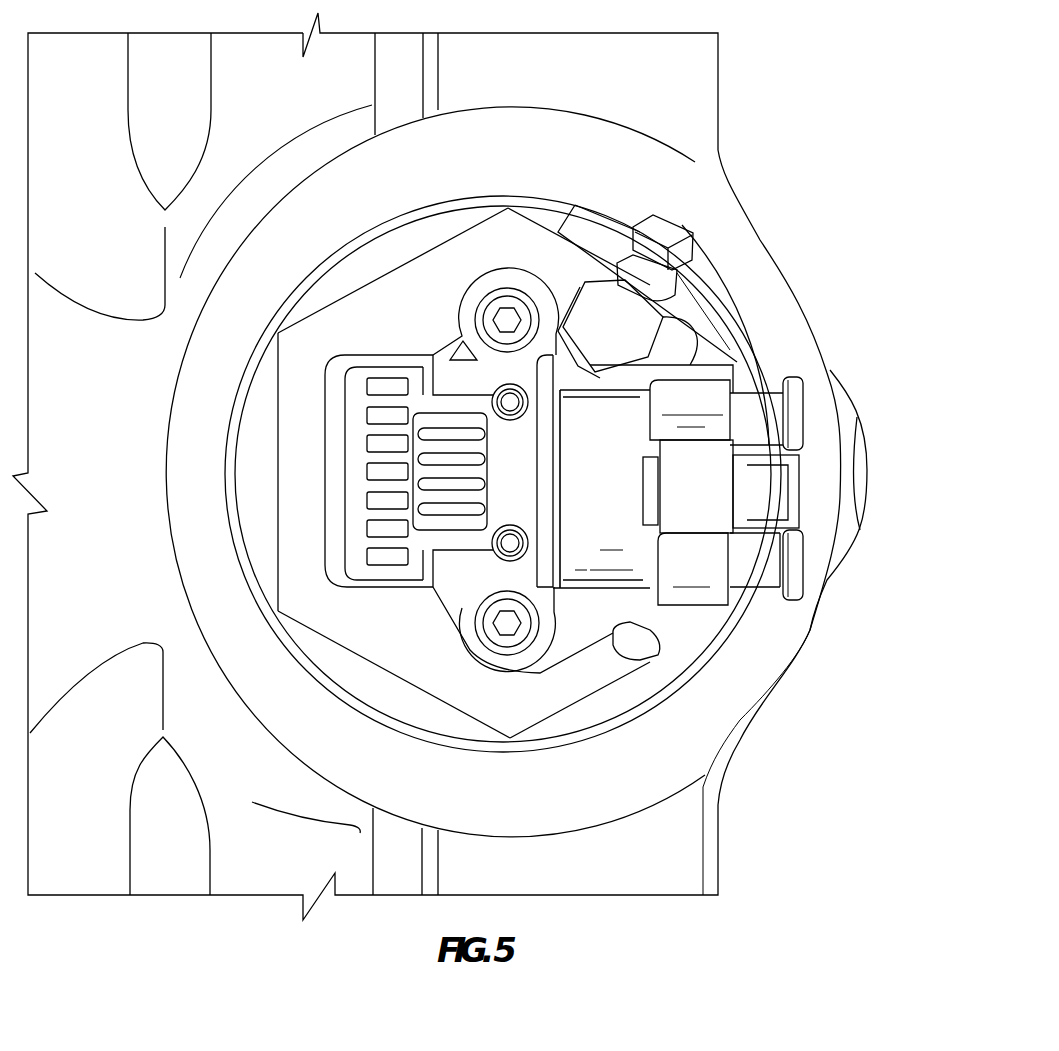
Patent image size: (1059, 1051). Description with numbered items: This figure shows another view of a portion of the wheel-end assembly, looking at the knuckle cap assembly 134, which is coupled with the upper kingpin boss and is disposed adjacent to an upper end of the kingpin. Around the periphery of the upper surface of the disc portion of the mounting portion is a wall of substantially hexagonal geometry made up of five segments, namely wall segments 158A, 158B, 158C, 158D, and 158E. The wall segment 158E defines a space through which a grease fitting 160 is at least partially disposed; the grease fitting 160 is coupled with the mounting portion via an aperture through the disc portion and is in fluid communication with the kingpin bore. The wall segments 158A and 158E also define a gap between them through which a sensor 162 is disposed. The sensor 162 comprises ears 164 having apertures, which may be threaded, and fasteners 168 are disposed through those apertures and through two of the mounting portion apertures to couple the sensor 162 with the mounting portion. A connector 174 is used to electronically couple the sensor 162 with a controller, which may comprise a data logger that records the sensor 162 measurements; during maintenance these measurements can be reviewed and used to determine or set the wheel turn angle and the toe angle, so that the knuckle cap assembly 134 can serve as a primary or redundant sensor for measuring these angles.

The knuckle cap assembly 134 is at (138, 146).
The wall segment 158A is at (585, 700).
The wall segment 158B is at (357, 657).
The wall segment 158C is at (278, 457).
The wall segment 158D is at (355, 296).
The wall segment 158E is at (640, 197).
The grease fitting 160 is at (668, 247).
The sensor 162 is at (470, 522).
The ears 164 is at (468, 303).
The fasteners 168 is at (505, 316).
The connector 174 is at (727, 463).